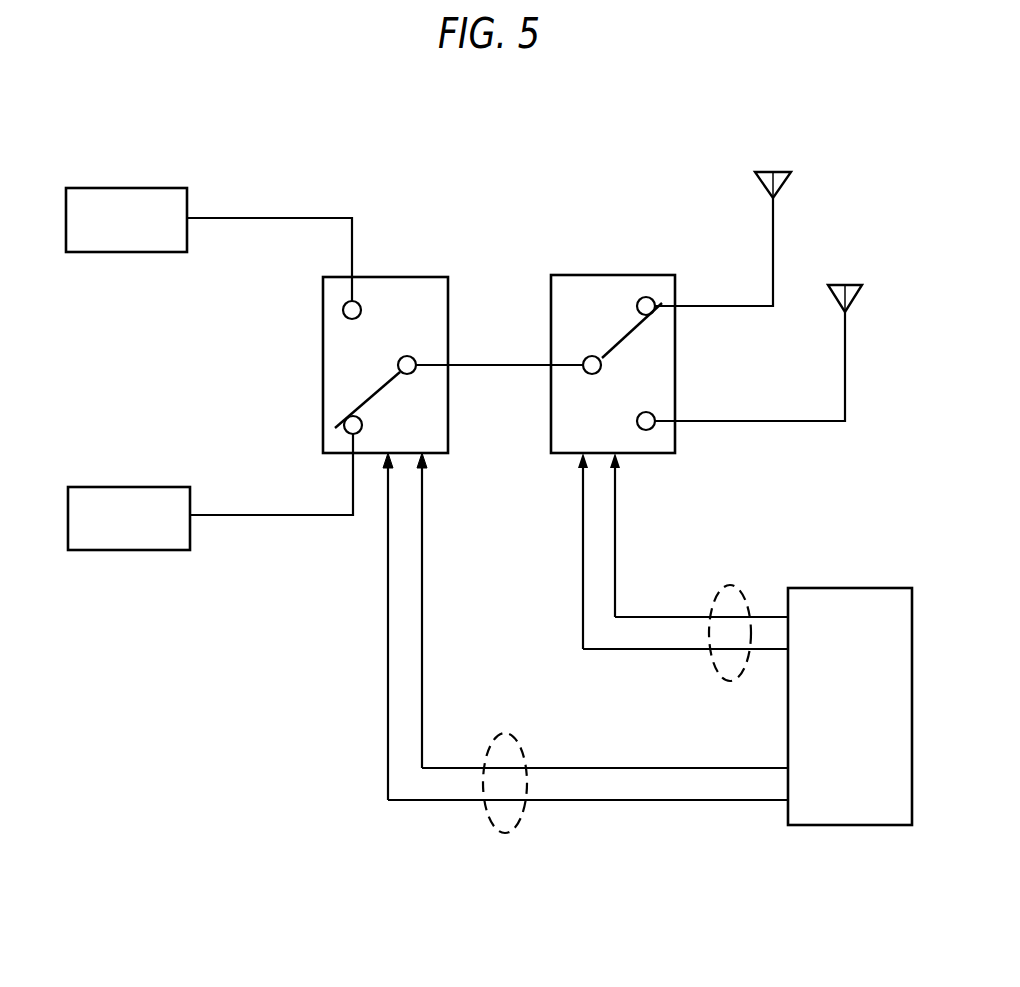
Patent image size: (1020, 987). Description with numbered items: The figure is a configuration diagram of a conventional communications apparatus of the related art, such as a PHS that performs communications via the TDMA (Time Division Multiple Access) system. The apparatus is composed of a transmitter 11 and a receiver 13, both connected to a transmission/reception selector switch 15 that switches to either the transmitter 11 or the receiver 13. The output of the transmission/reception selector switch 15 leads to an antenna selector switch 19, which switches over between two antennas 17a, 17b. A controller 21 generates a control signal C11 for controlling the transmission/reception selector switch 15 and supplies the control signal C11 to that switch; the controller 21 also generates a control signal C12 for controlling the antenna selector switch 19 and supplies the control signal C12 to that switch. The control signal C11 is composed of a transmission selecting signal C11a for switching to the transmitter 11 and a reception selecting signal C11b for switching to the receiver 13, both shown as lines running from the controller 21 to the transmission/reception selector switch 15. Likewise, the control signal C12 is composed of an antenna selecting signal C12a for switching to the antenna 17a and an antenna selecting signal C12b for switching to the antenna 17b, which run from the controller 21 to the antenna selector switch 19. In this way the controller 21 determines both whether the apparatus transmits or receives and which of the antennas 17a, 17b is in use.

The transmitter 11 is at (128, 188).
The receiver 13 is at (129, 487).
The transmission/reception selector switch 15 is at (385, 277).
The antenna selector switch 19 is at (612, 275).
The antenna 17a is at (781, 172).
The antenna 17b is at (856, 285).
The controller 21 is at (848, 588).
The control signal C11 is at (512, 735).
The transmission selecting signal C11a is at (424, 671).
The reception selecting signal C11b is at (387, 672).
The control signal C12 is at (736, 585).
The antenna selecting signal C12a is at (657, 602).
The antenna selecting signal C12b is at (640, 650).